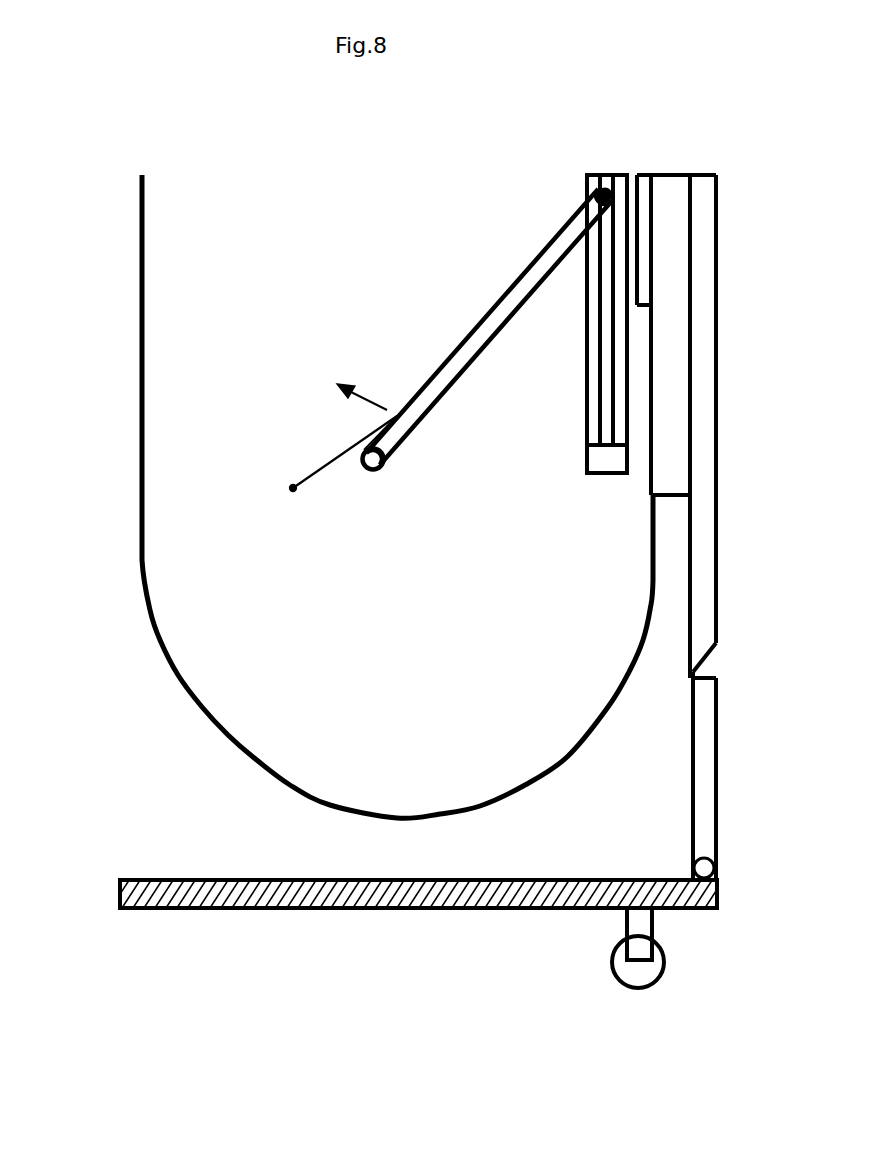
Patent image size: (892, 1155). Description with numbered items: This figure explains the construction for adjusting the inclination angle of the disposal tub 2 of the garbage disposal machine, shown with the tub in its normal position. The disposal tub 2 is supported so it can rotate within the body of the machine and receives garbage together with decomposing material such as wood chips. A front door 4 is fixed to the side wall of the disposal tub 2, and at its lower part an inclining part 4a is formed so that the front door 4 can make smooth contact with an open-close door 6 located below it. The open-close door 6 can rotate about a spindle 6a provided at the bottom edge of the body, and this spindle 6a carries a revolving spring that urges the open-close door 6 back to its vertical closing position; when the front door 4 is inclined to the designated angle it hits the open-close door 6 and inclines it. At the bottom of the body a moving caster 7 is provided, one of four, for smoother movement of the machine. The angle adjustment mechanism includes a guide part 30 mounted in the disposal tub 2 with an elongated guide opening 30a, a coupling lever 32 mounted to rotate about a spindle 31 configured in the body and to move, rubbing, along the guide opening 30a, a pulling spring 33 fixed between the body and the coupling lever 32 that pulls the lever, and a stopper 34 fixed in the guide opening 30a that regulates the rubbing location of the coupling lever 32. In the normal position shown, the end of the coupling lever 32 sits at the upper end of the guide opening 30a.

The disposal tub 2 is at (142, 562).
The front door 4 is at (703, 370).
The inclining part 4a is at (710, 655).
The open-close door 6 is at (703, 805).
The spindle 6a is at (705, 868).
The moving caster 7 is at (667, 958).
The guide part 30 is at (587, 175).
The guide opening 30a is at (600, 372).
The spindle 31 is at (373, 472).
The coupling lever 32 is at (447, 370).
The pulling spring 33 is at (347, 450).
The stopper 34 is at (600, 458).